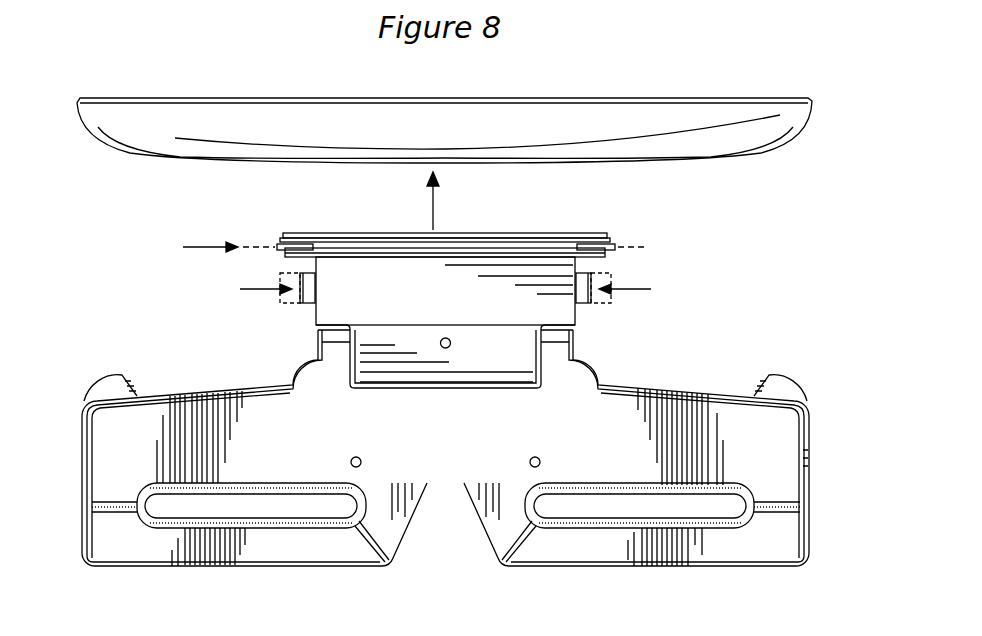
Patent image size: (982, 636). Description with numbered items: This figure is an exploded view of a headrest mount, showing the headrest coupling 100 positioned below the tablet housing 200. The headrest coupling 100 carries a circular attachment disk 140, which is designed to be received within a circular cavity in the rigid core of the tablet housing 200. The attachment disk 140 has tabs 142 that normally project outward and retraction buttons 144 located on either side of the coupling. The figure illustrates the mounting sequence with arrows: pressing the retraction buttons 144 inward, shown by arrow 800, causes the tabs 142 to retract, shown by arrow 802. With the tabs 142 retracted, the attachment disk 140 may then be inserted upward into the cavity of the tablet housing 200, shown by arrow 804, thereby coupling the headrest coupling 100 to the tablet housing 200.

The headrest coupling 100 is at (102, 440).
The attachment disk 140 is at (490, 235).
The tabs 142 is at (610, 240).
The retraction buttons 144 is at (301, 295).
The tablet housing 200 is at (797, 133).
The arrow 800 is at (240, 289).
The arrow 802 is at (193, 247).
The arrow 804 is at (430, 213).